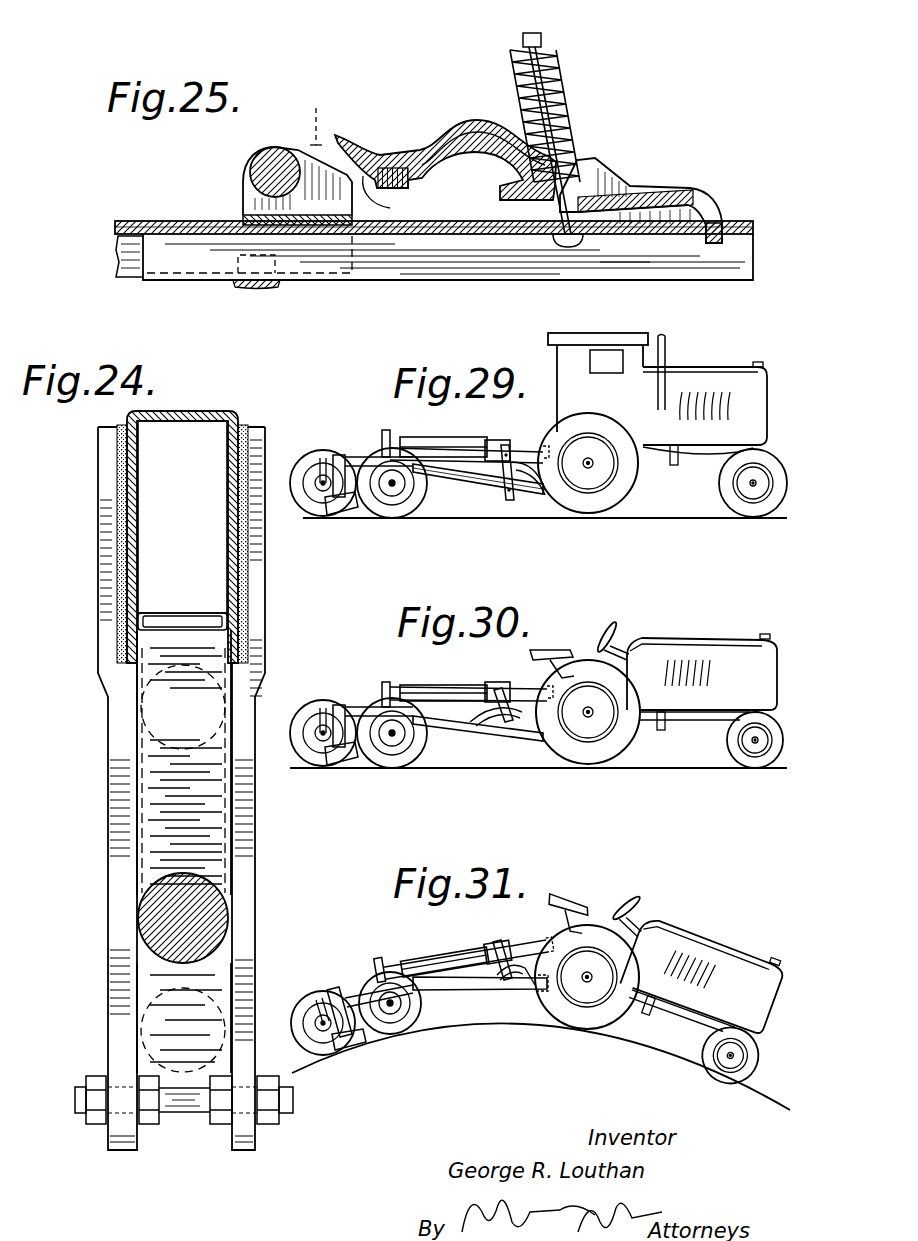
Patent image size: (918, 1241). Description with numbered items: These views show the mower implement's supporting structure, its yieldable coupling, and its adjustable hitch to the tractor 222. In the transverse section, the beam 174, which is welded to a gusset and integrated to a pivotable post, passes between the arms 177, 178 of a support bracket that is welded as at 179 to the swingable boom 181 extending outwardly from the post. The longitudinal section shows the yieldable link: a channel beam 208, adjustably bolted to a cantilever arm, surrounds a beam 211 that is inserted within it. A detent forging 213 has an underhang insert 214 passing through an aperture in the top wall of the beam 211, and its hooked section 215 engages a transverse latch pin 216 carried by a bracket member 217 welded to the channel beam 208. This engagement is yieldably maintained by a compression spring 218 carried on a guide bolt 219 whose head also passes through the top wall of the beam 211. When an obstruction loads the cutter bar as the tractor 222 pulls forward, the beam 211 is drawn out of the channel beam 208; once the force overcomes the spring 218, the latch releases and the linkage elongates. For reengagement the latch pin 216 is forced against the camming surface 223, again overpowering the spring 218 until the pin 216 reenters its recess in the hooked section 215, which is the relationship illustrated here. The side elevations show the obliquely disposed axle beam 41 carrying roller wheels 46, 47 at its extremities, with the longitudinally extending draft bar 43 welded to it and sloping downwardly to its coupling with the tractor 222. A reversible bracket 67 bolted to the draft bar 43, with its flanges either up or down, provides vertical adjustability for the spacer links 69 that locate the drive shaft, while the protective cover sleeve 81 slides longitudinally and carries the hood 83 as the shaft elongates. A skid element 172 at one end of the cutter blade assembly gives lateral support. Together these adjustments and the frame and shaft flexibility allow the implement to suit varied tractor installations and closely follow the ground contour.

In FIG. 25, the channel beam 208 is at (123, 221).
In FIG. 25, the beam 211 is at (508, 262).
In FIG. 25, the detent forging 213 is at (622, 190).
In FIG. 25, the underhang insert 214 is at (708, 243).
In FIG. 25, the hooked section 215 is at (436, 158).
In FIG. 25, the latch pin 216 is at (278, 160).
In FIG. 25, the bracket member 217 is at (250, 200).
In FIG. 25, the compression spring 218 is at (562, 62).
In FIG. 25, the guide bolt 219 is at (572, 186).
In FIG. 25, the camming surface 223 is at (398, 198).
In FIG. 24, the beam 174 is at (232, 1000).
In FIG. 24, the arm 177 is at (112, 857).
In FIG. 24, the arm 178 is at (250, 827).
In FIG. 24, the support bracket weld 179 is at (118, 567).
In FIG. 24, the swingable boom 181 is at (228, 500).
In FIG. 30, the axle beam 41 is at (337, 702).
In FIG. 31, the axle beam 41 is at (330, 990).
In FIG. 29, the draft bar 43 is at (465, 478).
In FIG. 30, the draft bar 43 is at (458, 728).
In FIG. 31, the draft bar 43 is at (462, 992).
In FIG. 29, the roller wheel 46 is at (308, 458).
In FIG. 30, the roller wheel 46 is at (308, 712).
In FIG. 31, the roller wheel 46 is at (298, 1012).
In FIG. 29, the roller wheel 47 is at (415, 500).
In FIG. 30, the roller wheel 47 is at (392, 768).
In FIG. 31, the roller wheel 47 is at (407, 1023).
In FIG. 29, the reversible bracket 67 is at (503, 496).
In FIG. 30, the reversible bracket 67 is at (510, 714).
In FIG. 31, the reversible bracket 67 is at (523, 988).
In FIG. 29, the spacer link 69 is at (536, 488).
In FIG. 30, the spacer link 69 is at (490, 716).
In FIG. 31, the spacer link 69 is at (500, 966).
In FIG. 29, the protective cover sleeve 81 is at (468, 447).
In FIG. 30, the protective cover sleeve 81 is at (451, 692).
In FIG. 31, the protective cover sleeve 81 is at (428, 958).
In FIG. 29, the hood 83 is at (515, 435).
In FIG. 30, the hood 83 is at (505, 675).
In FIG. 31, the hood 83 is at (506, 940).
In FIG. 31, the skid element 172 is at (343, 1052).
In FIG. 31, the tractor 222 is at (720, 942).